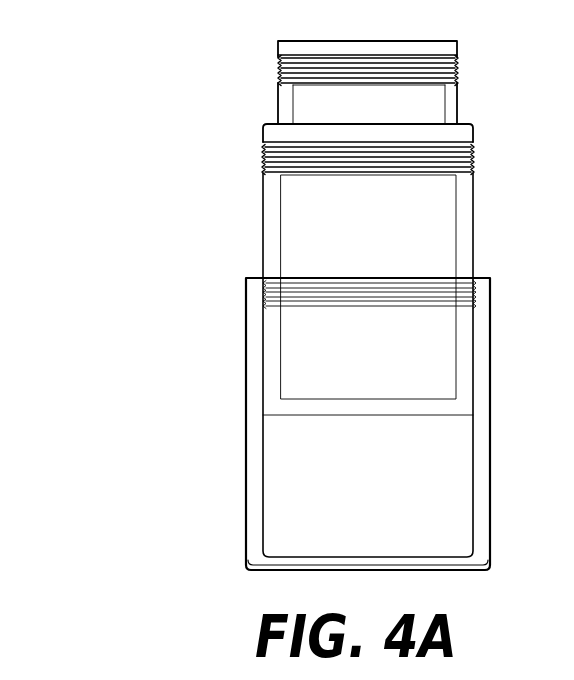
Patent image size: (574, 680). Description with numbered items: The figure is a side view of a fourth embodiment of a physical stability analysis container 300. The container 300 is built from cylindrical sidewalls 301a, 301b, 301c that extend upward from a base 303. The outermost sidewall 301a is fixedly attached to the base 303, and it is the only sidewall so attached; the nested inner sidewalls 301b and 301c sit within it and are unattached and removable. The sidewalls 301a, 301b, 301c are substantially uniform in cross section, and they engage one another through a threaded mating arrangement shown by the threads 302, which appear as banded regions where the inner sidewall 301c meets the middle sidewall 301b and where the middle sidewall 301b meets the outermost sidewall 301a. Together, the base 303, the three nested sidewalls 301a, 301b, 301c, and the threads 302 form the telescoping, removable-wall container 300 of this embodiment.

The physical stability analysis container 300 is at (165, 388).
The outermost sidewall 301a is at (256, 459).
The cylindrical sidewall 301b is at (281, 238).
The cylindrical sidewall 301c is at (293, 109).
The threads 302 is at (458, 65).
The base 303 is at (283, 571).